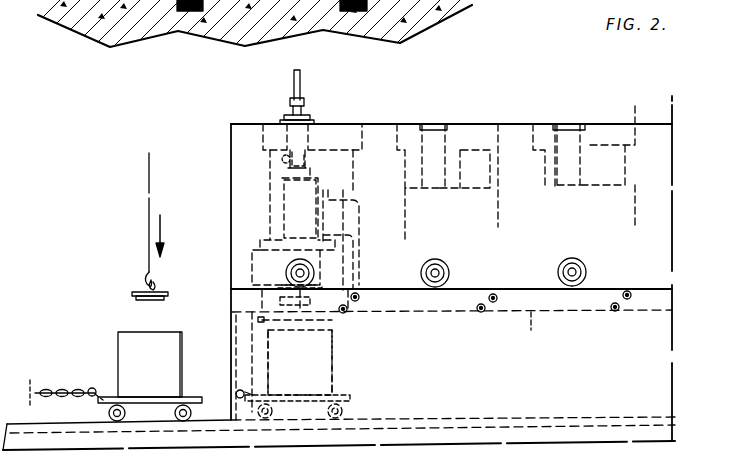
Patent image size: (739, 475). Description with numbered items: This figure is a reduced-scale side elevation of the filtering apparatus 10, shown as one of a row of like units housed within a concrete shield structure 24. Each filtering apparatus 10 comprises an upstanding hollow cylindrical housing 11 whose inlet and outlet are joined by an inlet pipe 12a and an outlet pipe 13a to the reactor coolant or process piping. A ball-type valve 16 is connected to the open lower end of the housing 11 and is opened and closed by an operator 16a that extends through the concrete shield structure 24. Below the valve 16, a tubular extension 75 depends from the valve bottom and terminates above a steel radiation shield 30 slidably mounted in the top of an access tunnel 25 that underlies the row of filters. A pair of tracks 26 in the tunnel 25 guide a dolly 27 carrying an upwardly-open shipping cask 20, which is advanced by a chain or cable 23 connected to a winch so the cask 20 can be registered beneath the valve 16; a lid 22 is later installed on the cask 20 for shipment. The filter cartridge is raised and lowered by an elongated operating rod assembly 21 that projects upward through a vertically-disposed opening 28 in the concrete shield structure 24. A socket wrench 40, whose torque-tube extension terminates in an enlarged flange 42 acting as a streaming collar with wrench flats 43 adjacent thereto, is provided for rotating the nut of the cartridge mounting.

The filtering apparatus 10 is at (345, 121).
The hollow cylindrical housing 11 is at (284, 213).
The inlet pipe 12a is at (358, 294).
The outlet pipe 13a is at (345, 312).
The valve 16 is at (284, 273).
The valve operator 16a is at (286, 270).
The shipping cask 20 is at (118, 338).
The operating rod assembly 21 is at (293, 78).
The lid 22 is at (132, 290).
The chain or cable 23 is at (60, 389).
The concrete shield structure 24 is at (665, 175).
The access tunnel 25 is at (531, 330).
The tracks 26 is at (40, 426).
The dolly 27 is at (196, 397).
The vertically-disposed opening 28 is at (290, 158).
The radiation shield 30 is at (262, 322).
The socket wrench 40 is at (310, 163).
The enlarged flange 42 is at (311, 122).
The wrench flats 43 is at (289, 111).
The tubular extension 75 is at (280, 308).